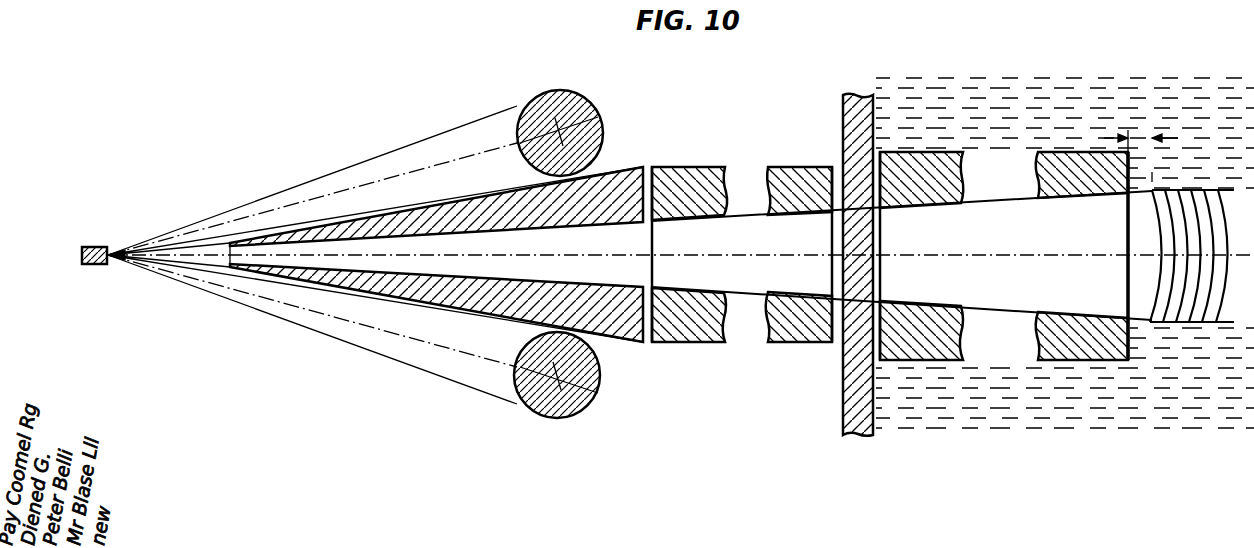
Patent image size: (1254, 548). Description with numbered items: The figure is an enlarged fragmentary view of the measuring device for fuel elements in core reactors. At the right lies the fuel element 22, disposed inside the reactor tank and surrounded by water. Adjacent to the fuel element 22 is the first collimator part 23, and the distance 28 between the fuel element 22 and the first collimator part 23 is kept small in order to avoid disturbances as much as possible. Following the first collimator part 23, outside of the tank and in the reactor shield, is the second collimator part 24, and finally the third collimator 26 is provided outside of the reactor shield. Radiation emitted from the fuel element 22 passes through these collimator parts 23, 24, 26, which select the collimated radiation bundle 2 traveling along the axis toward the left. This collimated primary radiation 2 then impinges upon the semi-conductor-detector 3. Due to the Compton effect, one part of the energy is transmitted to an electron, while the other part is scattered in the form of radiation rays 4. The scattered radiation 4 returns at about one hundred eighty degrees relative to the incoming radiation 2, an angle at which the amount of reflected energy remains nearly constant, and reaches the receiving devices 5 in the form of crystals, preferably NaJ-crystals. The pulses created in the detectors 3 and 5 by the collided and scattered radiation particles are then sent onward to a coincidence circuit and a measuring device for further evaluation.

The semi-conductor-detector 3 is at (91, 248).
The scattered radiation rays 4 is at (435, 166).
The receiving device 5 is at (588, 106).
The third collimator 26 is at (618, 187).
The radiation bundle 2 is at (735, 257).
The second collimator part 24 is at (782, 178).
The first collimator part 23 is at (1065, 170).
The fuel element 22 is at (1190, 205).
The distance 28 is at (1142, 138).